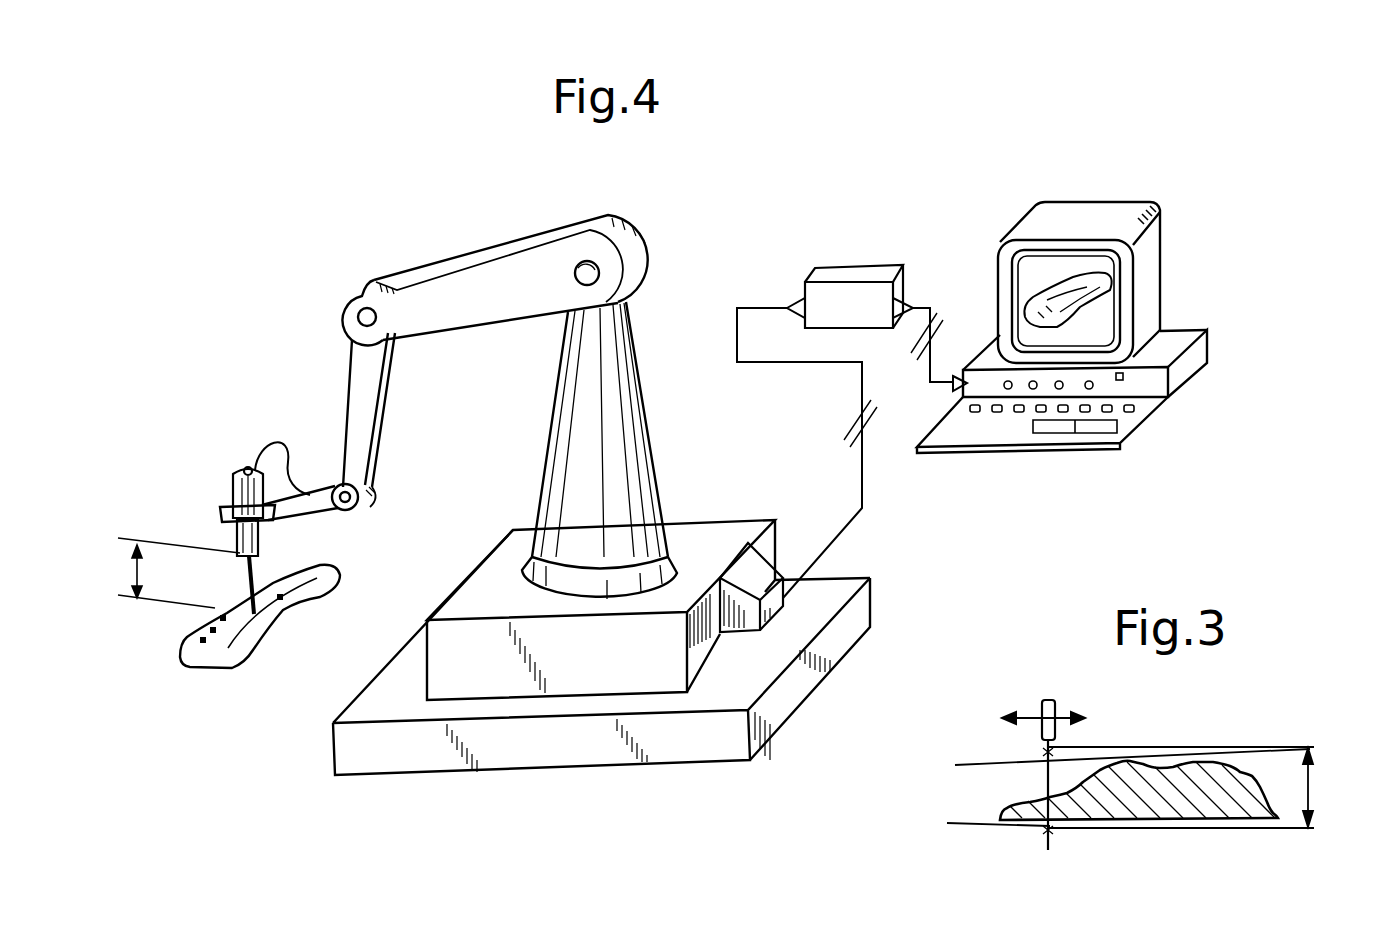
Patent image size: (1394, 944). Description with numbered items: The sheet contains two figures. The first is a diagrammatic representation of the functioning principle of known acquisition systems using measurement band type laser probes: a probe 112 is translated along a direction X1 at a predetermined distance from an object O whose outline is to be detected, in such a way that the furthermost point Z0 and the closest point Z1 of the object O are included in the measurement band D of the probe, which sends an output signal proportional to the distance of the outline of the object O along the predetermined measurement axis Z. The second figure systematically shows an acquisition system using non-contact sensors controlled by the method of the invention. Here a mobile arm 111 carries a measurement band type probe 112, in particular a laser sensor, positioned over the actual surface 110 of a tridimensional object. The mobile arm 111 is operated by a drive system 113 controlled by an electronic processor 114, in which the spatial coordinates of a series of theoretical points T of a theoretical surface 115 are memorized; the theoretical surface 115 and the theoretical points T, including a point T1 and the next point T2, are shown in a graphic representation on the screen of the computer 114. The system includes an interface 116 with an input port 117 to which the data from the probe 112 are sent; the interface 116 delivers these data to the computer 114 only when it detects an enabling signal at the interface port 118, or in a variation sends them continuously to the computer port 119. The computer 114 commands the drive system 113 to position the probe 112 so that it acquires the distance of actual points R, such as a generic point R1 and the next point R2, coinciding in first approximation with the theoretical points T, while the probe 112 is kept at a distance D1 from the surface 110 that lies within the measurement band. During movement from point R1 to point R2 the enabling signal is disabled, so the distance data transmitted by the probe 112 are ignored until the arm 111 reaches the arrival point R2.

In FIG. 4, the surface 110 is at (337, 568).
In FIG. 4, the mobile arm 111 is at (453, 247).
In FIG. 4, the measurement band type probe 112 is at (237, 487).
In FIG. 3, the measurement band type probe 112 is at (1042, 705).
In FIG. 4, the drive system 113 is at (750, 572).
In FIG. 4, the electronic processor 114 is at (1184, 203).
In FIG. 4, the theoretical surface 115 is at (1107, 273).
In FIG. 4, the interface 116 is at (852, 273).
In FIG. 4, the input port 117 is at (800, 303).
In FIG. 4, the interface port 118 is at (907, 292).
In FIG. 4, the computer port 119 is at (953, 377).
In FIG. 4, the theoretical points T is at (1052, 290).
In FIG. 4, the theoretical point T1 is at (1058, 310).
In FIG. 4, the next theoretical point T2 is at (1085, 294).
In FIG. 4, the actual points R is at (192, 633).
In FIG. 4, the generic point R1 is at (253, 627).
In FIG. 4, the next point R2 is at (307, 600).
In FIG. 4, the distance D1 is at (128, 568).
In FIG. 3, the direction X1 is at (1063, 710).
In FIG. 3, the closest point Z1 is at (955, 763).
In FIG. 3, the furthermost point Z0 is at (950, 822).
In FIG. 3, the measurement axis Z is at (1046, 835).
In FIG. 3, the object O is at (1220, 772).
In FIG. 3, the measurement band D is at (1312, 790).